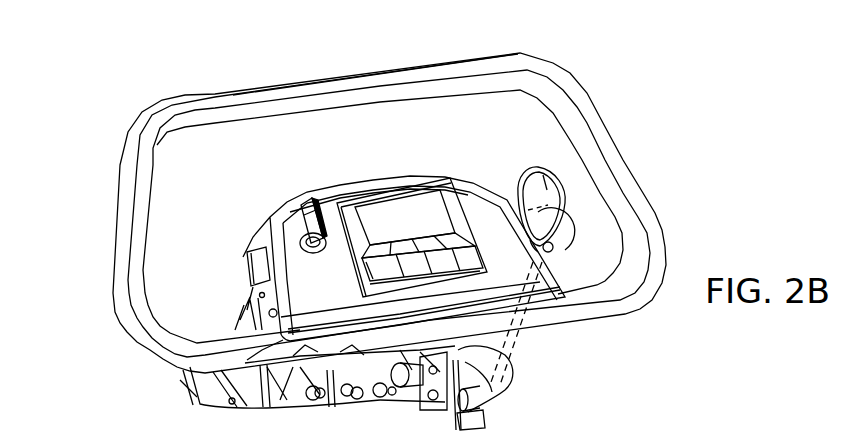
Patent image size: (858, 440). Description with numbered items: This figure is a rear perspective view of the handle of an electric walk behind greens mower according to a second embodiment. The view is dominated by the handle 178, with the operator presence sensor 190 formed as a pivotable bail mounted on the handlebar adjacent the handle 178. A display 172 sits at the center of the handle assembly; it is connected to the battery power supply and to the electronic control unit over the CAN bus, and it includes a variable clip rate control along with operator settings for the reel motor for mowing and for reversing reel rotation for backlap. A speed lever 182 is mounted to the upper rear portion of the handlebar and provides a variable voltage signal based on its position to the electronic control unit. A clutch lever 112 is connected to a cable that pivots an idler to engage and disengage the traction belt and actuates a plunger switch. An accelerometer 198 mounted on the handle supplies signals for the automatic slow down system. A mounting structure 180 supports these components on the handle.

The clutch lever 112 is at (564, 228).
The display 172 is at (417, 215).
The handle 178 is at (122, 195).
The mounting bracket 180 is at (218, 387).
The speed lever 182 is at (537, 172).
The operator presence sensor 190 is at (237, 100).
The accelerometer 198 is at (247, 270).